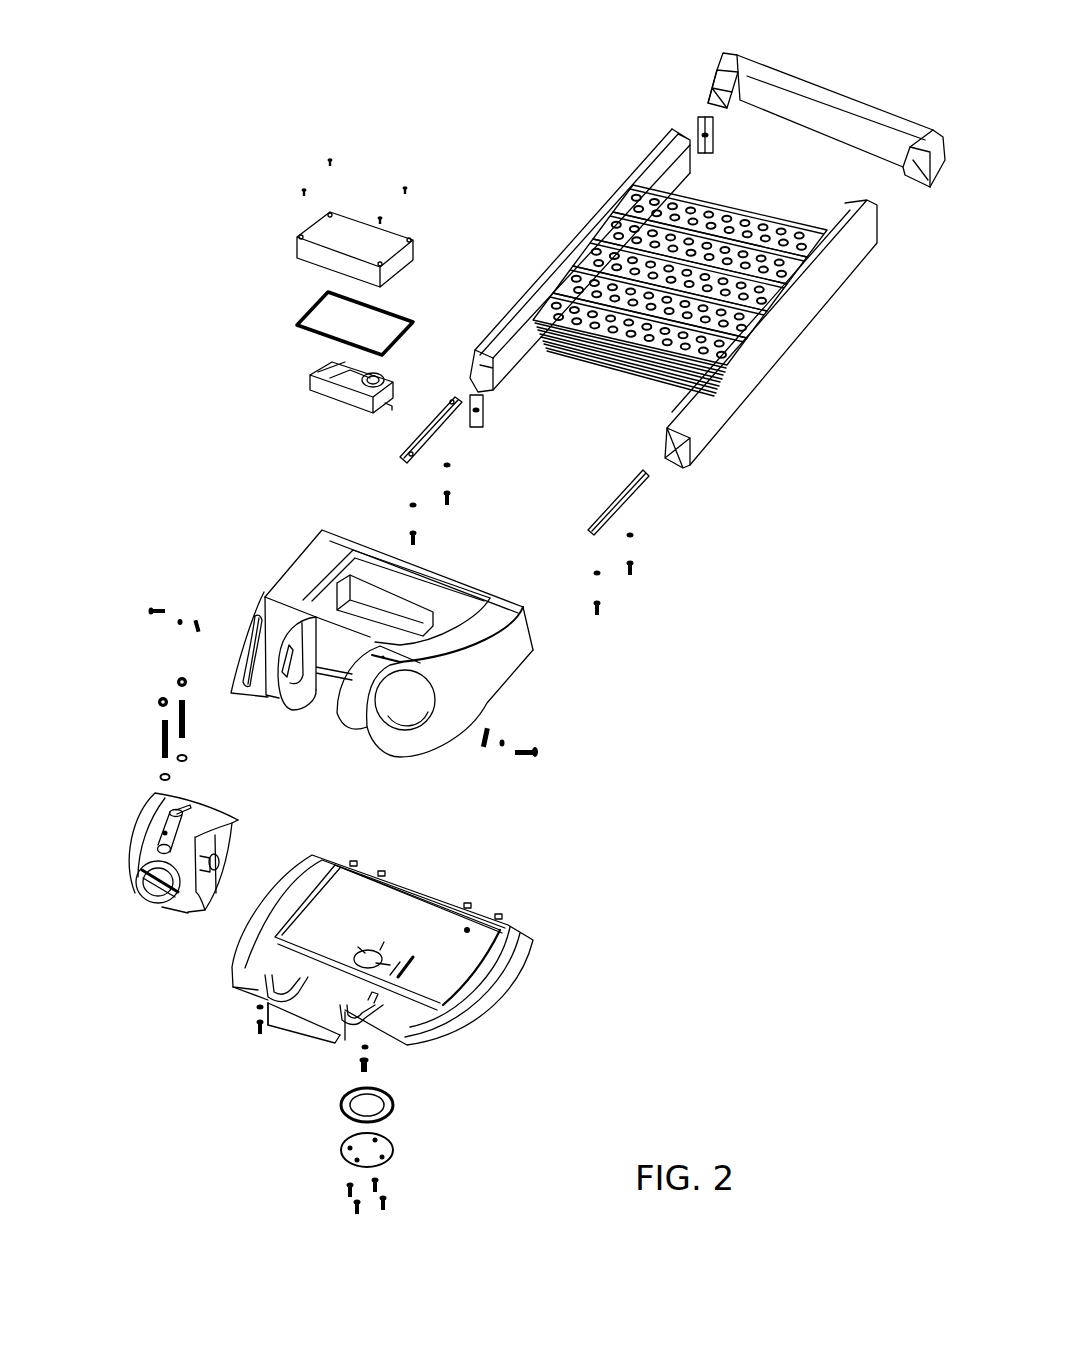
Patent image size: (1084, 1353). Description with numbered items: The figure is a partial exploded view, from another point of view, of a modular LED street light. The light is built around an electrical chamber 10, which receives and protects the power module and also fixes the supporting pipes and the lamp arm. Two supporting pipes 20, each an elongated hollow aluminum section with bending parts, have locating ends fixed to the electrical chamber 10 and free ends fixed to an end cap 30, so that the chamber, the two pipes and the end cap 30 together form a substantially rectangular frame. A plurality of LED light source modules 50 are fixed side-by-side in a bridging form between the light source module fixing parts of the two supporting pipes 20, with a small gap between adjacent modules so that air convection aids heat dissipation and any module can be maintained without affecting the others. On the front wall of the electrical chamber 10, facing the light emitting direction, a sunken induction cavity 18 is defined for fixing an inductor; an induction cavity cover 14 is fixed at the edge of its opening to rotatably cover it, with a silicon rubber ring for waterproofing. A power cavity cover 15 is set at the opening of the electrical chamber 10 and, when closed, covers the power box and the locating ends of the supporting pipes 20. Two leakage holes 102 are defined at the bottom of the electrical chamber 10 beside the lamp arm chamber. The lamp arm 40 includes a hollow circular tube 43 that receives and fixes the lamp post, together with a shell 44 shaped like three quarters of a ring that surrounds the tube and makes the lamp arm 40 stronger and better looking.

The electrical chamber 10 is at (510, 657).
The leakage holes 102 is at (280, 618).
The induction cavity cover 14 is at (323, 230).
The power cavity cover 15 is at (493, 973).
The induction cavity 18 is at (337, 607).
The supporting pipe 20 is at (790, 323).
The end cap 30 is at (737, 57).
The lamp arm 40 is at (157, 863).
The circular tube 43 is at (162, 873).
The shell 44 is at (162, 832).
The LED light source modules 50 is at (657, 147).